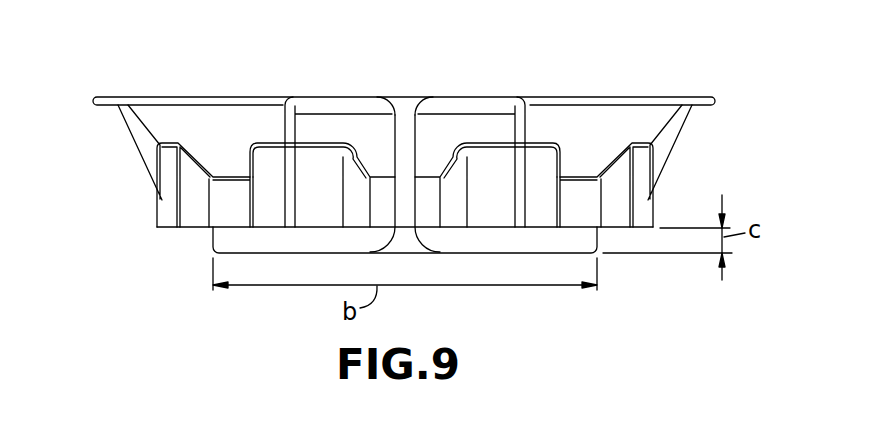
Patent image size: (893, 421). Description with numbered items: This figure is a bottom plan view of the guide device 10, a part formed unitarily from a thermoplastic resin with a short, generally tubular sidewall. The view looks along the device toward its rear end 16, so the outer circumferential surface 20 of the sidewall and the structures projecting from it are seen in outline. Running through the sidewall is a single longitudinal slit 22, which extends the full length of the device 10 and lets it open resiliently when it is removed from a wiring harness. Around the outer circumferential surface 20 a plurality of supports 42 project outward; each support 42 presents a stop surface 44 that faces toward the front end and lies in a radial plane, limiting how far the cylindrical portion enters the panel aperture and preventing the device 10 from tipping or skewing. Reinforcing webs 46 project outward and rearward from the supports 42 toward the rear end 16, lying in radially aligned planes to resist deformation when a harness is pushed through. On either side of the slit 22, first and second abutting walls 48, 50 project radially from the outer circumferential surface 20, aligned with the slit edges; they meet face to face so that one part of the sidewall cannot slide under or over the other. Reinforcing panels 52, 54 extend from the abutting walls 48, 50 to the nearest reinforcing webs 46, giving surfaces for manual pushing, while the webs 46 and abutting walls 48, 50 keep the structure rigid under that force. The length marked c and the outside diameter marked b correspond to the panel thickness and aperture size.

The guide device 10 is at (678, 46).
The rear end 16 is at (167, 97).
The outer circumferential surface 20 is at (404, 174).
The longitudinal slit 22 is at (404, 225).
The supports 42 is at (155, 206).
The stop surface 44 is at (170, 230).
The reinforcing webs 46 is at (136, 141).
The first abutting wall 48 is at (392, 140).
The second abutting wall 50 is at (418, 140).
The reinforcing panel 52 is at (295, 100).
The reinforcing panel 54 is at (493, 100).